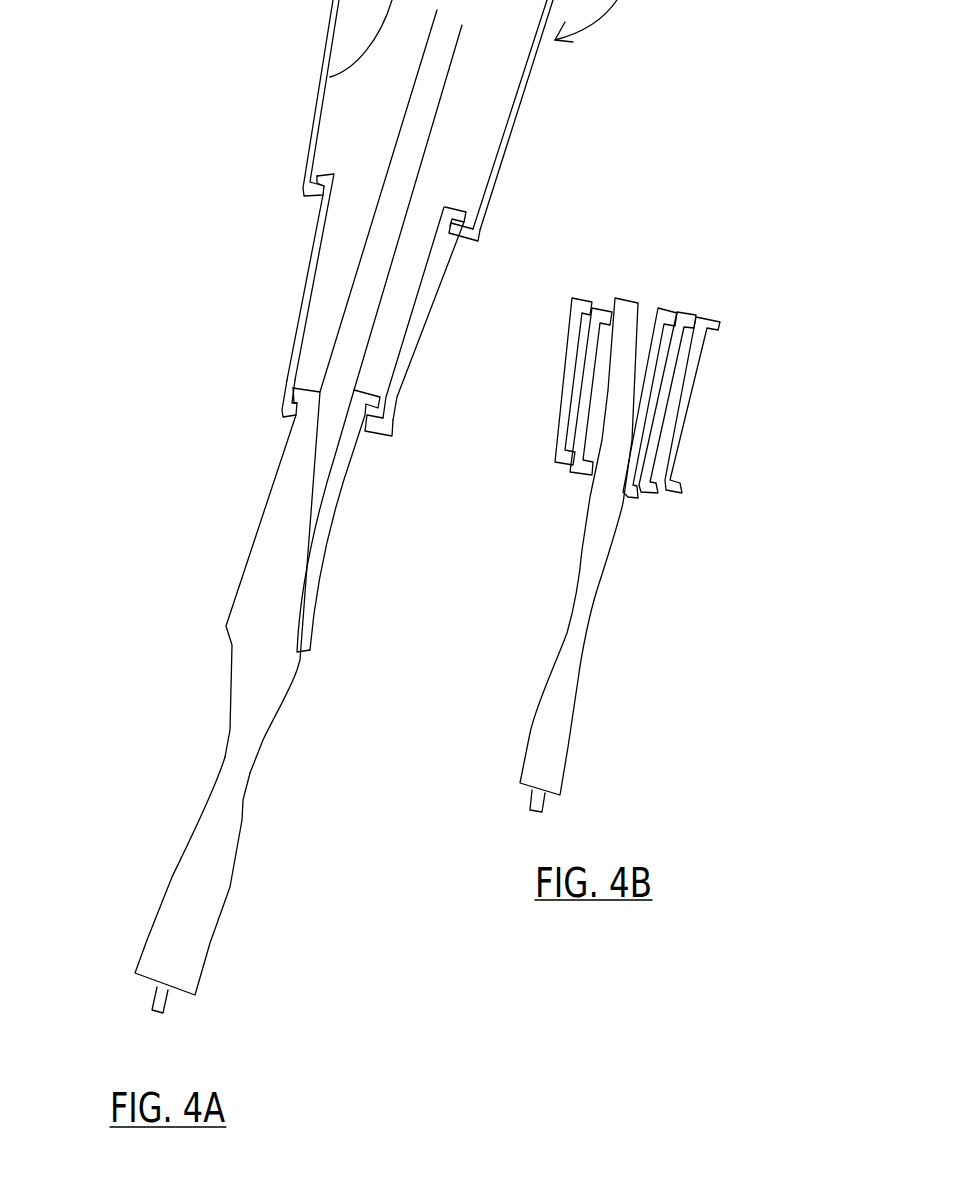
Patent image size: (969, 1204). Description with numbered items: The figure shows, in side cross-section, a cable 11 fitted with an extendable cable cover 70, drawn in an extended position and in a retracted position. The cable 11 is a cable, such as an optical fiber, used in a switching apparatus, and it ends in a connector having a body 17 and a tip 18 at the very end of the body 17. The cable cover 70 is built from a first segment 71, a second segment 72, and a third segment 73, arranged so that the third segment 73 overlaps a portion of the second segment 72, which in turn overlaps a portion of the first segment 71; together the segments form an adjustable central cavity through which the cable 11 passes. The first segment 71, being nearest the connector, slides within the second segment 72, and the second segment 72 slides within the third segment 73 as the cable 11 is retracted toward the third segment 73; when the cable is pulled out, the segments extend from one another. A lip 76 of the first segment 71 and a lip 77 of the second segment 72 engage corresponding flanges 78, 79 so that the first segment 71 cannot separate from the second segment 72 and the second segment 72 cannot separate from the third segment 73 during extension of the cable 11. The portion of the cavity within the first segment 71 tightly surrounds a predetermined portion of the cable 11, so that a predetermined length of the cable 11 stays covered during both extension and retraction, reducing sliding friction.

In FIG. 4A, the first cable 11 is at (222, 758).
In FIG. 4B, the first cable 11 is at (597, 603).
In FIG. 4A, the body 17 is at (180, 890).
In FIG. 4A, the tip 18 is at (157, 988).
In FIG. 4B, the extendable cable cover 70 is at (694, 455).
In FIG. 4A, the first segment 71 is at (334, 508).
In FIG. 4A, the second segment 72 is at (404, 373).
In FIG. 4A, the third segment 73 is at (530, 77).
In FIG. 4A, the lip 76 is at (290, 418).
In FIG. 4A, the lip 77 is at (466, 241).
In FIG. 4A, the flange 78 is at (308, 390).
In FIG. 4A, the flange 79 is at (322, 176).